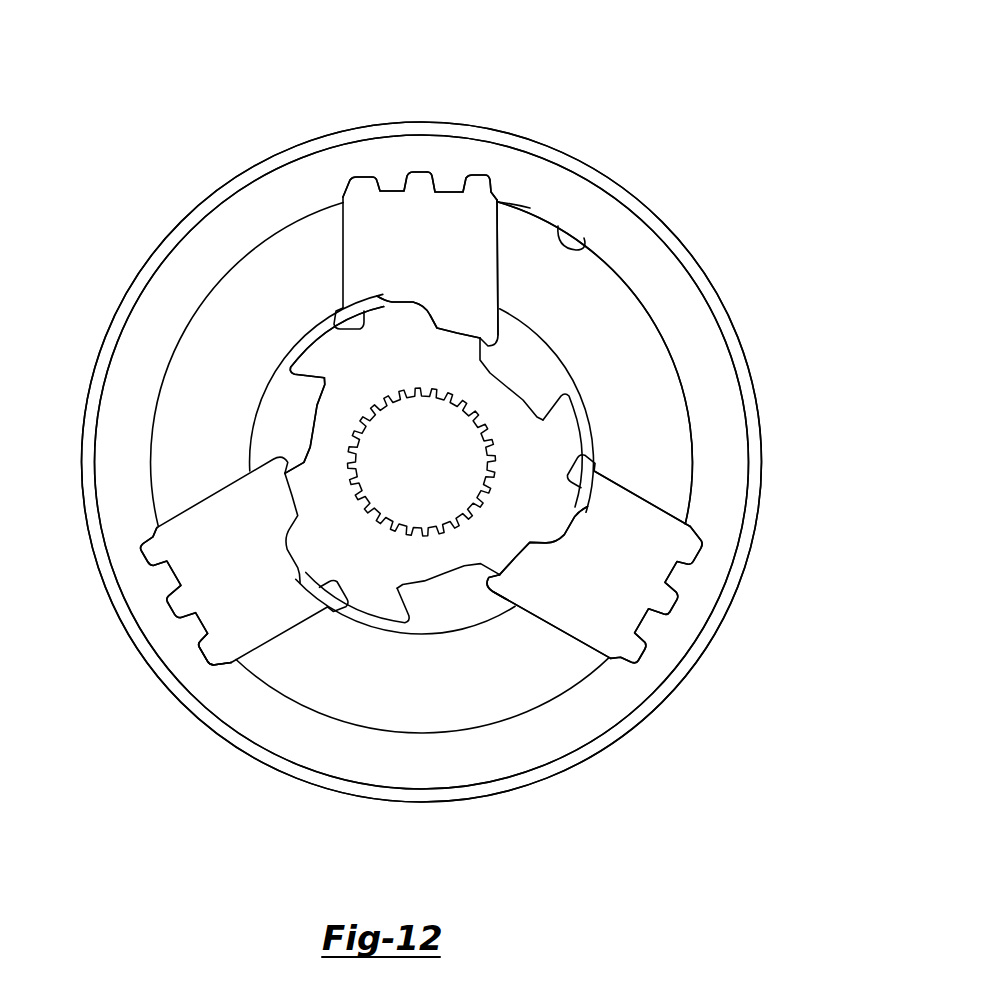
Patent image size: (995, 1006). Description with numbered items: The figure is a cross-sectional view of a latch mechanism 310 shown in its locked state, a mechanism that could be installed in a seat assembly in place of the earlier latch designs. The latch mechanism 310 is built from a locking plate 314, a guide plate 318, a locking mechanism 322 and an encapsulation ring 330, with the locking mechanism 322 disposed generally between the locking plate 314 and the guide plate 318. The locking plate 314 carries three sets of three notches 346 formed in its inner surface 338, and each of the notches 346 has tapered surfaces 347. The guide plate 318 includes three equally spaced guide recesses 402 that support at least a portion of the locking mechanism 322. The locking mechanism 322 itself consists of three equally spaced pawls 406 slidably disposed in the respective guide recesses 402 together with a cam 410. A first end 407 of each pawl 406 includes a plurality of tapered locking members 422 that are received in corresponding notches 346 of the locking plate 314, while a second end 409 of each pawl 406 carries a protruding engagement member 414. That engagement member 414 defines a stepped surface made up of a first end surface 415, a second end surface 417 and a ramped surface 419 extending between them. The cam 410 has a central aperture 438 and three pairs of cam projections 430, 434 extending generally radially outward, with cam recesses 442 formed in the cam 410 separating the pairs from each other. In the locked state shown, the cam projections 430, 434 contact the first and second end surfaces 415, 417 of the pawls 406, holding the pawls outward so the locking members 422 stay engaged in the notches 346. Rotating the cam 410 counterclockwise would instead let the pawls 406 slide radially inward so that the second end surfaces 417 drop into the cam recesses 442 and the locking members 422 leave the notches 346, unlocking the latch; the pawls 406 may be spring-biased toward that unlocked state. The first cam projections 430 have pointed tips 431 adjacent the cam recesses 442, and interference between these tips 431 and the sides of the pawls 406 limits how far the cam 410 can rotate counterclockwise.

The latch mechanism 310 is at (572, 68).
The locking plate 314 is at (708, 383).
The guide plate 318 is at (632, 330).
The locking mechanism 322 is at (215, 667).
The encapsulation ring 330 is at (760, 493).
The inner surface 338 is at (588, 240).
The notches 346 is at (407, 173).
The tapered surfaces 347 is at (487, 197).
The guide recesses 402 is at (632, 488).
The pawls 406 is at (352, 240).
The first end 407 is at (590, 633).
The second end 409 is at (583, 477).
The cam 410 is at (313, 421).
The engagement member 414 is at (503, 577).
The first end surface 415 is at (355, 315).
The second end surface 417 is at (500, 347).
The ramped surface 419 is at (420, 305).
The locking members 422 is at (470, 177).
The first cam projections 430 is at (320, 360).
The pointed tips 431 is at (397, 620).
The second cam projections 434 is at (455, 332).
The central aperture 438 is at (400, 497).
The cam recesses 442 is at (520, 393).